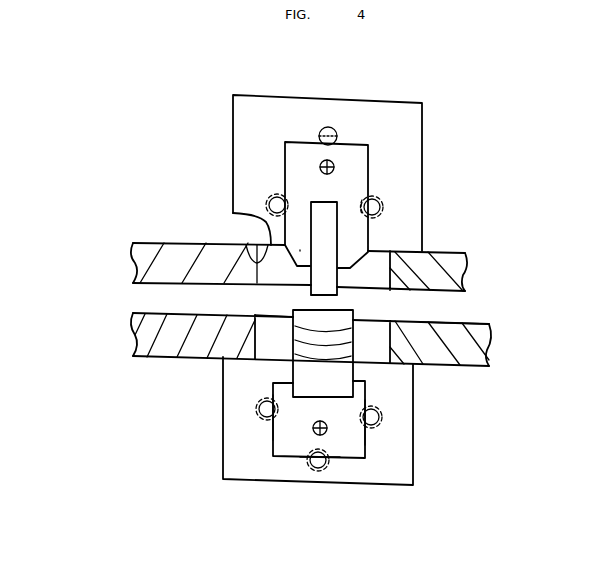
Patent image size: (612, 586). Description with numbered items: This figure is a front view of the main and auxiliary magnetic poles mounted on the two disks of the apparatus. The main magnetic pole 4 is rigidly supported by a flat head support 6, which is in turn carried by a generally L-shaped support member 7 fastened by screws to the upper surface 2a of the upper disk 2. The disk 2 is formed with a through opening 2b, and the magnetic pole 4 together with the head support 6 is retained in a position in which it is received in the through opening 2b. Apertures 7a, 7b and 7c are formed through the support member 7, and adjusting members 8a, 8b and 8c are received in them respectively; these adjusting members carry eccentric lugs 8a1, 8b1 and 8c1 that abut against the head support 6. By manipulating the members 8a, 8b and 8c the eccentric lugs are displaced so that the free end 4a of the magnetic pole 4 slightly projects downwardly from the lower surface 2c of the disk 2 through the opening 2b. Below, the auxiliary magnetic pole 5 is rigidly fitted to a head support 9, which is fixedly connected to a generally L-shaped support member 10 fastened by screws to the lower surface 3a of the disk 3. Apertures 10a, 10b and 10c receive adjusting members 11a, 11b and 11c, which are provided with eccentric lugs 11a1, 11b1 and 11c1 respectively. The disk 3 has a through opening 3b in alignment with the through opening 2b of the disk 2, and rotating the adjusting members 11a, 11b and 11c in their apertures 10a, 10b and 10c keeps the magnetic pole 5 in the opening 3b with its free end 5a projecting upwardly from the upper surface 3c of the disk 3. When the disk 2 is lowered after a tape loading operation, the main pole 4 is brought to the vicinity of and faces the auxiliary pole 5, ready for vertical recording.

The upper disk 2 is at (160, 262).
The upper surface of the upper disk 2a is at (208, 243).
The through opening 2b is at (262, 248).
The lower surface of the disk 2c is at (175, 284).
The disk 3 is at (157, 335).
The lower surface of the disk 3a is at (183, 358).
The through opening 3b is at (265, 313).
The upper surface of the disk 3c is at (433, 323).
The main magnetic pole 4 is at (343, 233).
The free end of the magnetic pole 4a is at (332, 300).
The auxiliary magnetic pole 5 is at (306, 374).
The free end of the auxiliary magnetic pole 5a is at (312, 308).
The head support 6 is at (348, 172).
The support member 7 is at (398, 145).
The aperture 7a is at (273, 215).
The aperture 7b is at (337, 148).
The aperture 7c is at (376, 216).
The adjusting member 8a is at (282, 196).
The eccentric lug 8a1 is at (273, 196).
The adjusting member 8b is at (320, 131).
The eccentric lug 8b1 is at (332, 127).
The adjusting member 8c is at (376, 198).
The eccentric lug 8c1 is at (378, 200).
The head support 9 is at (293, 437).
The support member 10 is at (238, 466).
The aperture 10a is at (268, 420).
The aperture 10b is at (320, 470).
The aperture 10c is at (372, 426).
The adjusting member 11a is at (260, 402).
The eccentric lug 11a1 is at (262, 413).
The adjusting member 11b is at (330, 462).
The eccentric lug 11b1 is at (322, 468).
The adjusting member 11c is at (372, 404).
The eccentric lug 11c1 is at (380, 415).